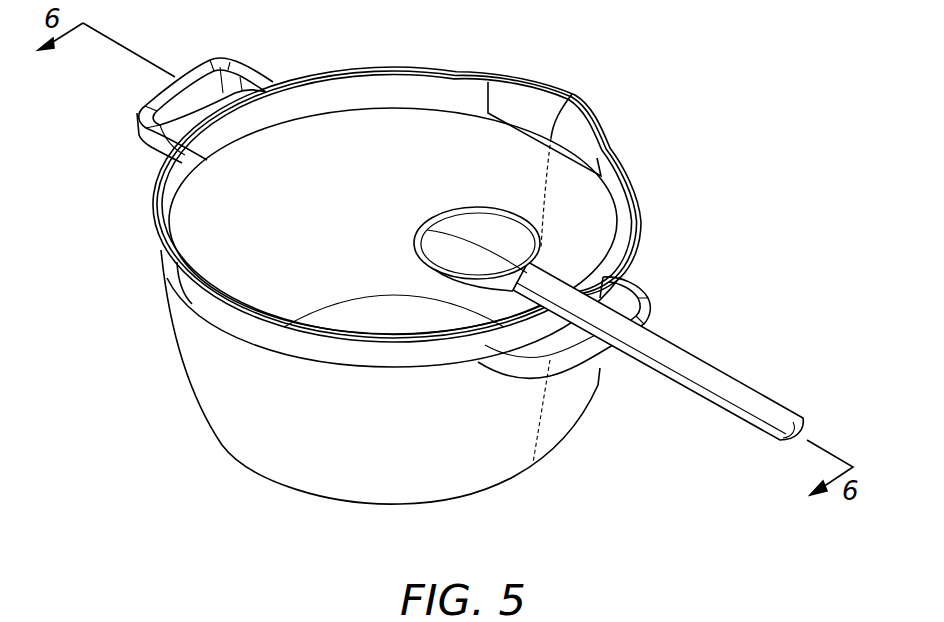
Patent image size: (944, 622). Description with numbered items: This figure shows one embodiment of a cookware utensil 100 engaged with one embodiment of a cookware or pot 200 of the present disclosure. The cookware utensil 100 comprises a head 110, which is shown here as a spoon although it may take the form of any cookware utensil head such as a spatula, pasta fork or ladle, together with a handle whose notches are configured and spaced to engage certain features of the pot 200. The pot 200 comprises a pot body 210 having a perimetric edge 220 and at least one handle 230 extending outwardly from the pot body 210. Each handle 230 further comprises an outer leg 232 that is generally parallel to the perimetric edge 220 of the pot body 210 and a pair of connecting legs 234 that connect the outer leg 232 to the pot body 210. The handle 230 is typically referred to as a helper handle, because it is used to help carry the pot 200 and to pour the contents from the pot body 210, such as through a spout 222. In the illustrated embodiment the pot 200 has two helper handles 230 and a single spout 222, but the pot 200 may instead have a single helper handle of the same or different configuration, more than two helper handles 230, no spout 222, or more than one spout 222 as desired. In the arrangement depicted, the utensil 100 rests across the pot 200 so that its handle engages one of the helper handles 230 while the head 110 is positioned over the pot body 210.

The cookware utensil 100 is at (759, 381).
The head 110 is at (463, 213).
The cookware or pot 200 is at (231, 465).
The pot body 210 is at (407, 468).
The perimetric edge 220 is at (397, 66).
The spout 222 is at (575, 95).
The handle 230 is at (167, 88).
The outer leg 232 is at (207, 58).
The connecting legs 234 is at (150, 140).